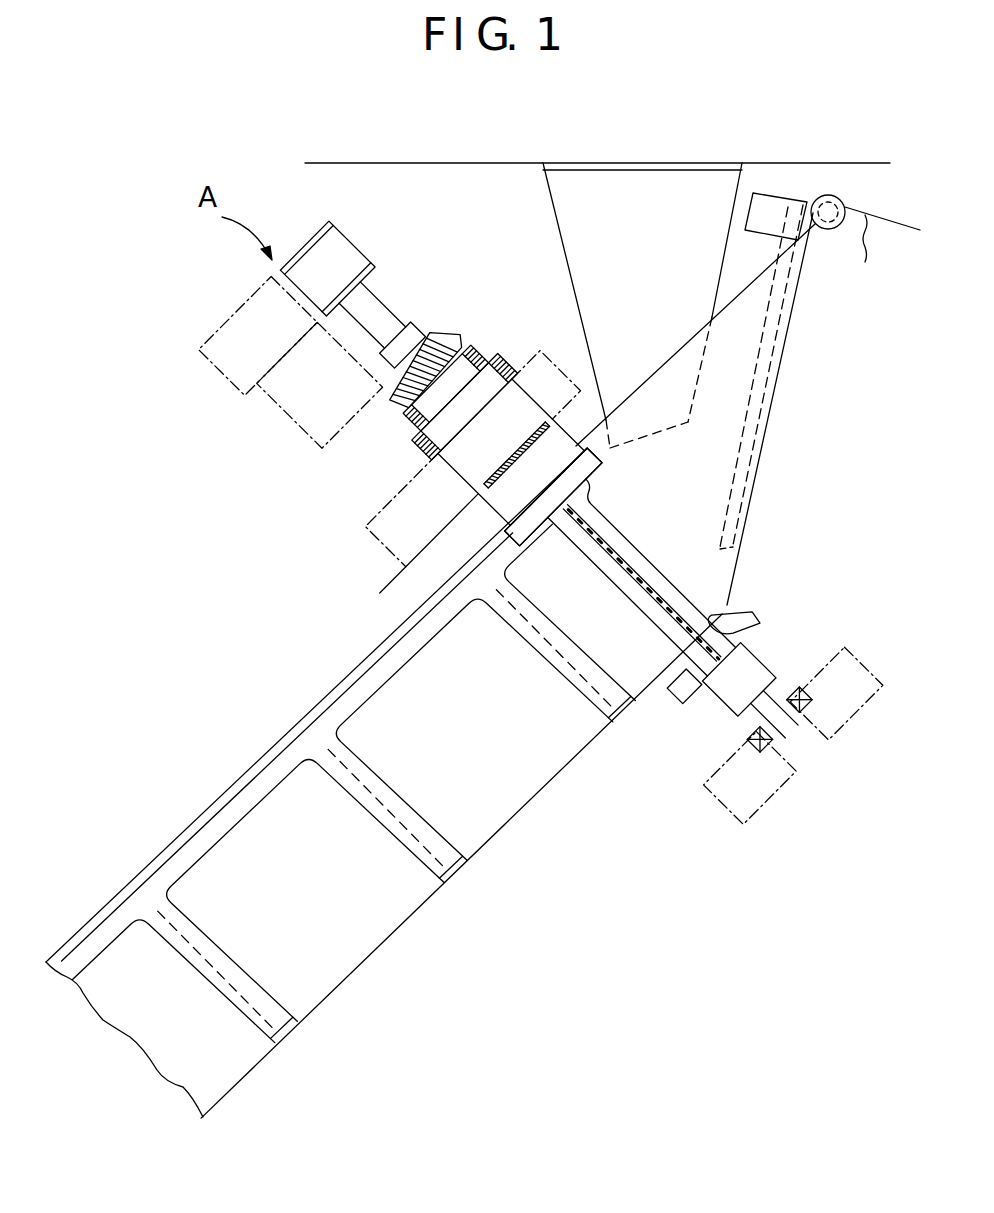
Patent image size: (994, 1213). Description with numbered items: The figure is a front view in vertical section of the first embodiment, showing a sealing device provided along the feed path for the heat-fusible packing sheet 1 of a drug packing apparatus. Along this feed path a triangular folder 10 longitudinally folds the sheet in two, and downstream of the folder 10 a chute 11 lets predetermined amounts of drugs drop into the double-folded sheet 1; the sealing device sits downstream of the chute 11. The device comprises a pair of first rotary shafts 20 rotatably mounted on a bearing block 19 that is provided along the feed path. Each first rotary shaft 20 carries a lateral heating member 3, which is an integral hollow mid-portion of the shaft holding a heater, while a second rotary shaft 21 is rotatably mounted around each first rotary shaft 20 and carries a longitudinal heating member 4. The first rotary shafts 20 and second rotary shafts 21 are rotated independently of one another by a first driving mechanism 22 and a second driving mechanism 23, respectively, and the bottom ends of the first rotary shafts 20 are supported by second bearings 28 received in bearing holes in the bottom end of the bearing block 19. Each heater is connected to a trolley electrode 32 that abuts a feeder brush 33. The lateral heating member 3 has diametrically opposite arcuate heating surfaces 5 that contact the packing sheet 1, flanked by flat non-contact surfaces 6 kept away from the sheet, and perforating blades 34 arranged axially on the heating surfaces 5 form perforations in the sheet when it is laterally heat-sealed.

The packing sheet 1 is at (750, 307).
The lateral heating member 3 is at (690, 605).
The longitudinal heating member 4 is at (437, 559).
The heating surfaces 5 is at (677, 700).
The non-contact surfaces 6 is at (668, 577).
The triangular folder 10 is at (797, 197).
The chute 11 is at (636, 187).
The bearing block 19 is at (393, 518).
The first rotary shaft 20 is at (373, 310).
The second rotary shaft 21 is at (553, 497).
The first driving mechanism 22 is at (462, 338).
The second driving mechanism 23 is at (508, 378).
The second bearings 28 is at (775, 752).
The trolley electrode 32 is at (333, 240).
The feeder brush 33 is at (238, 398).
The perforating blades 34 is at (630, 567).